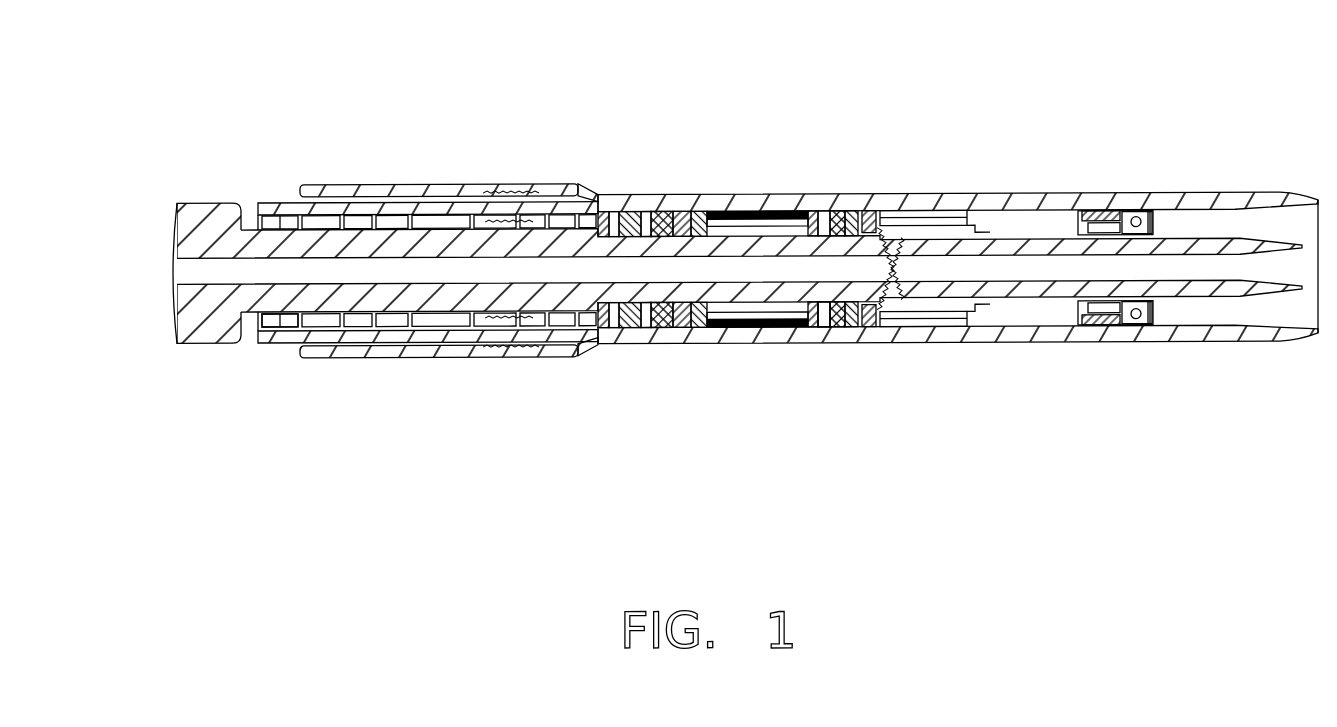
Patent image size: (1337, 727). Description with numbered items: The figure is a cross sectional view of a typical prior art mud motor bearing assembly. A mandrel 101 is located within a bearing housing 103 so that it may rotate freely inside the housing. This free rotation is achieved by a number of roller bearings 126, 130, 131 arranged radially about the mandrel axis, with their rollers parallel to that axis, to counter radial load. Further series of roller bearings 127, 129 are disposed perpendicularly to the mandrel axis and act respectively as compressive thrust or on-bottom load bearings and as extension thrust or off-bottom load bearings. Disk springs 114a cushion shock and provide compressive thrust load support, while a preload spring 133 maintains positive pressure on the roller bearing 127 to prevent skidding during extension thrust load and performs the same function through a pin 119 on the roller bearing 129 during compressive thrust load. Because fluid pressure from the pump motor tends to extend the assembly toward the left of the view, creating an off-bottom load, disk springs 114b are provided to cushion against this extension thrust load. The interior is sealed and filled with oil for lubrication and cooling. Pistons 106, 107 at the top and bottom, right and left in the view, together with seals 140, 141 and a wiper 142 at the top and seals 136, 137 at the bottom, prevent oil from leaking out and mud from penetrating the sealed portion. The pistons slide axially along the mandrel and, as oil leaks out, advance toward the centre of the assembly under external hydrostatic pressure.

The mandrel 101 is at (200, 228).
The bearing housing 103 is at (468, 347).
The piston 106 is at (1095, 322).
The piston 107 is at (298, 320).
The disk springs 114a is at (610, 220).
The disk springs 114b is at (860, 221).
The pin 119 is at (787, 221).
The roller bearing 126 is at (543, 219).
The roller bearing 127 is at (645, 220).
The roller bearing 129 is at (828, 325).
The roller bearing 130 is at (953, 327).
The roller bearing 131 is at (1113, 327).
The preload spring 133 is at (715, 220).
The seal 136 is at (313, 218).
The seal 137 is at (343, 319).
The seal 140 is at (1137, 218).
The seal 141 is at (1137, 241).
The wiper 142 is at (1150, 306).